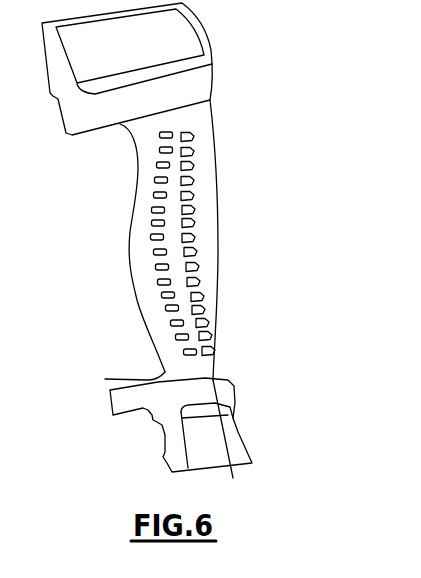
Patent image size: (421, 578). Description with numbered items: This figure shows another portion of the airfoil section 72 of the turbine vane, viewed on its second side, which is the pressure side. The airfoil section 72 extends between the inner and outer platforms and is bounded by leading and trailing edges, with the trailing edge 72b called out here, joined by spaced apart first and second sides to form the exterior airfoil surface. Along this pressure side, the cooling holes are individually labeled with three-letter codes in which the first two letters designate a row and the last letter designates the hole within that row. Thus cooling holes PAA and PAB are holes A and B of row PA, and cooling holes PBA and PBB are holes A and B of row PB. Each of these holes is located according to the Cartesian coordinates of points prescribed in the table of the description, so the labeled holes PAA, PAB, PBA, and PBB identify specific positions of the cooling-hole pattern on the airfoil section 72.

The airfoil section 72 is at (147, 240).
The trailing edge 72b is at (138, 301).
The cooling hole PAA is at (160, 150).
The cooling hole PAB is at (160, 135).
The cooling hole PBA is at (194, 151).
The cooling hole PBB is at (194, 136).